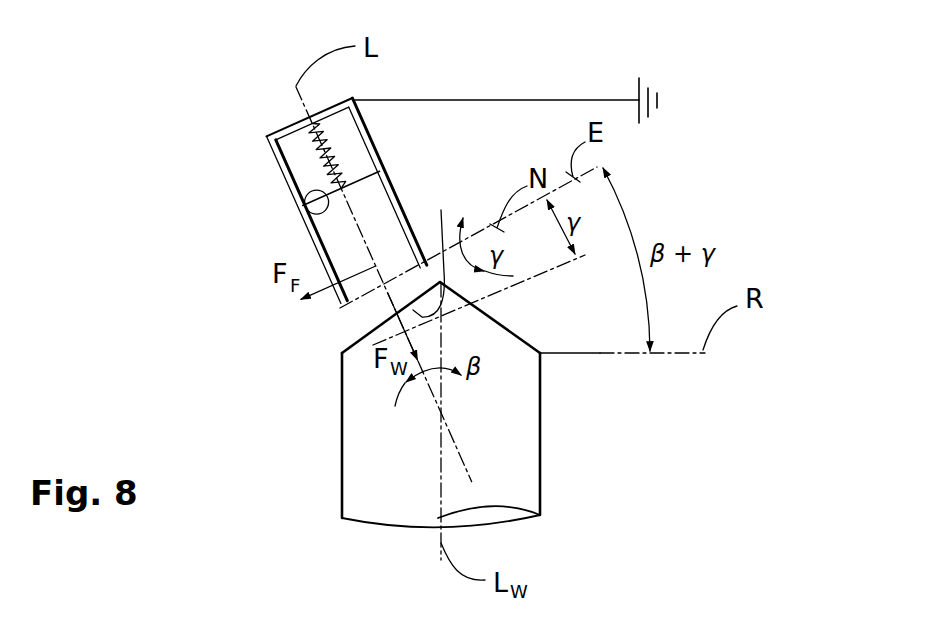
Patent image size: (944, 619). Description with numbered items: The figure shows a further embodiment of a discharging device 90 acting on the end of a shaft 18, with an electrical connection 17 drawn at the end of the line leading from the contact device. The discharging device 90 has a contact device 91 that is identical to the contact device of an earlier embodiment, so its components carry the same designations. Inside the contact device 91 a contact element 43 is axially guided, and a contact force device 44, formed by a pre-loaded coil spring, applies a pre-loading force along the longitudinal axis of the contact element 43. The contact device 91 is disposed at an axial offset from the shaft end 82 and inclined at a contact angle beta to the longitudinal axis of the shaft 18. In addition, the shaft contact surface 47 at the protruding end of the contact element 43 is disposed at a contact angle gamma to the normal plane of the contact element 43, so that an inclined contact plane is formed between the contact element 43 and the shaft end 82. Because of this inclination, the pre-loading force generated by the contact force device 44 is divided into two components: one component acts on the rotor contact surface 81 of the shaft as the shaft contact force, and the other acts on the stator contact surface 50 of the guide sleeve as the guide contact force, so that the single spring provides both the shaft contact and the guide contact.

The ground / electrical reference 17 is at (668, 91).
The shaft 18 is at (517, 482).
The contact element 43 is at (380, 212).
The contact force device 44 is at (305, 164).
The shaft contact surface 47 is at (441, 210).
The stator contact surface 50 is at (312, 194).
The rotor contact surface 81 is at (348, 344).
The shaft end 82 is at (522, 336).
The discharging device 90 is at (469, 99).
The contact device 91 is at (312, 247).